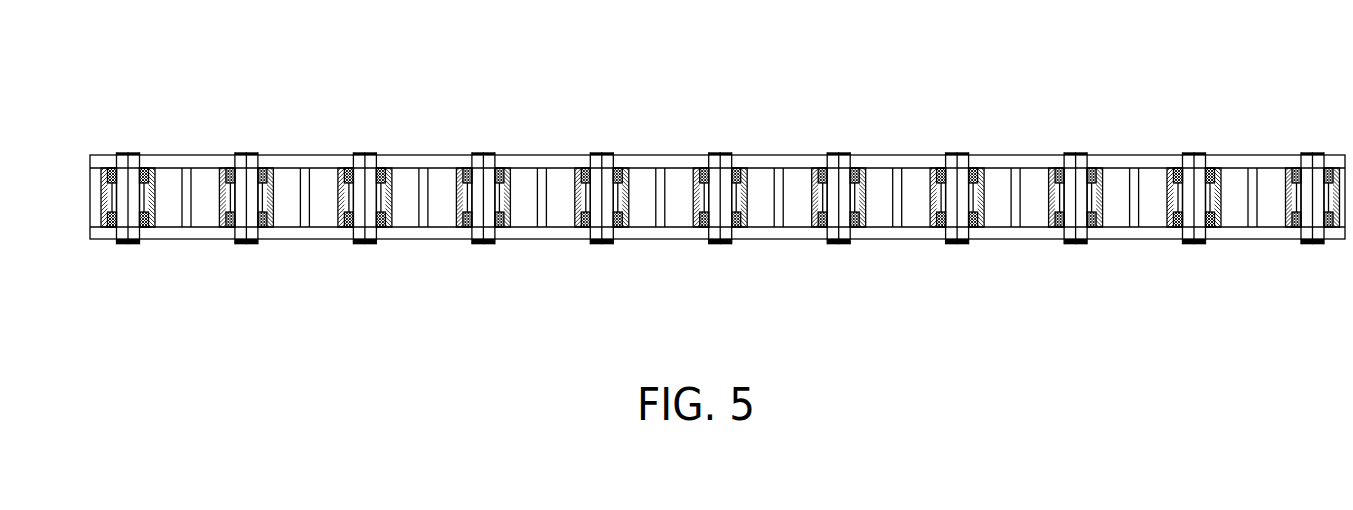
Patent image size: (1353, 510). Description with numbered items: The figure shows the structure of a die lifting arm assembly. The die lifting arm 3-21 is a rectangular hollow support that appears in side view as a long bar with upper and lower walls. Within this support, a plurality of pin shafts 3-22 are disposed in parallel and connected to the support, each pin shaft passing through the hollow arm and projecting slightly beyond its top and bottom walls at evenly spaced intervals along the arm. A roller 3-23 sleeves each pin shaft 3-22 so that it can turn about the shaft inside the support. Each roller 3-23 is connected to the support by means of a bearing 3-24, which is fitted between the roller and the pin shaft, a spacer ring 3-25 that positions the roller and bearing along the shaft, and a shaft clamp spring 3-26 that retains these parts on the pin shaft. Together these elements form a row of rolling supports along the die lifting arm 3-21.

The die lifting arm 3-21 is at (750, 162).
The pin shaft 3-22 is at (847, 150).
The roller 3-23 is at (863, 192).
The bearing 3-24 is at (973, 172).
The spacer ring 3-25 is at (1088, 170).
The shaft clamp spring 3-26 is at (1203, 153).